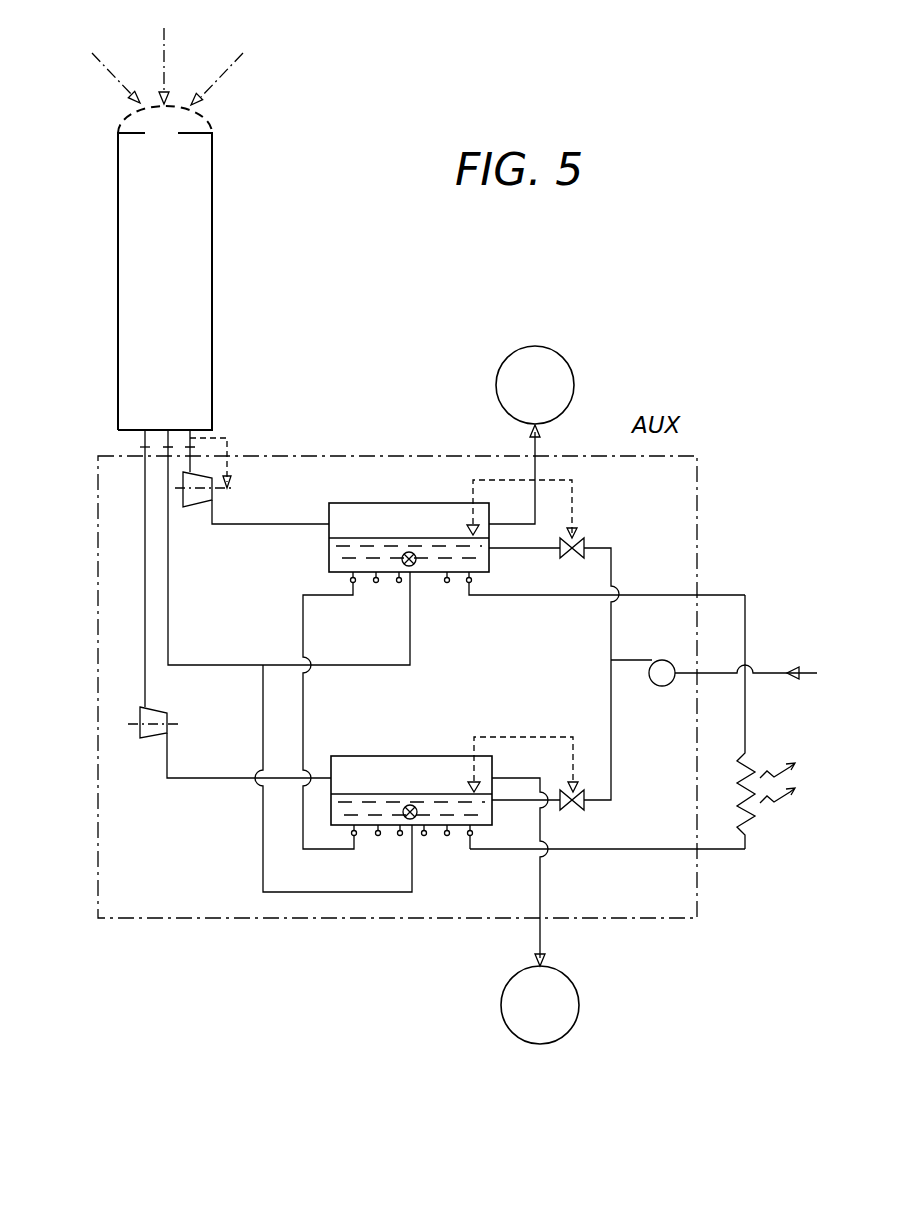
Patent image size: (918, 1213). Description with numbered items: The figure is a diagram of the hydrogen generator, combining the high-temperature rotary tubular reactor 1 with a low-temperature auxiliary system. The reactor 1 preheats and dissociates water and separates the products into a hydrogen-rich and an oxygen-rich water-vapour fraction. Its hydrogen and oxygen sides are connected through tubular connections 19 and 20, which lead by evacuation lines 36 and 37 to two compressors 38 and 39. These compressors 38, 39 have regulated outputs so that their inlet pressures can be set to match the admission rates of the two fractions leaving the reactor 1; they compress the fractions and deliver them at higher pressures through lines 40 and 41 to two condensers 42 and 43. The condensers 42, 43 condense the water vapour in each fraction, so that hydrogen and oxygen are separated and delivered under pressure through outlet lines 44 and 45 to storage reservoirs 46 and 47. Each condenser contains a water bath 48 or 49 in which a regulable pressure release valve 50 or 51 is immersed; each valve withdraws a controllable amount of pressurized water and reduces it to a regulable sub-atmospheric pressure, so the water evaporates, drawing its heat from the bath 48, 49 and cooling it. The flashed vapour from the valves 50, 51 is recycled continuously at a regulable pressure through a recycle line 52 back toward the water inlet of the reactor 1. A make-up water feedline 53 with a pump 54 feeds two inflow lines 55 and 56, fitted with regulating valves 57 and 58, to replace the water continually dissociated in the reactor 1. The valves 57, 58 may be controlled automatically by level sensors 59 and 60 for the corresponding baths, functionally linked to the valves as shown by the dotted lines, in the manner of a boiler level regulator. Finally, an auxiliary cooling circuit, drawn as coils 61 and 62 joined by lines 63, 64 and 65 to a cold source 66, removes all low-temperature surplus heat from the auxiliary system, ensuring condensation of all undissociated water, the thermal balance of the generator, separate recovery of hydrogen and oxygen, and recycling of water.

The rotary tubular reactor 1 is at (212, 223).
The tubular connection 19 is at (190, 433).
The tubular connection 20 is at (144, 441).
The evacuation line 36 is at (186, 462).
The evacuation line 37 is at (145, 542).
The compressor 38 is at (194, 497).
The compressor 39 is at (148, 740).
The line 40 is at (233, 527).
The line 41 is at (178, 780).
The condenser 42 is at (453, 543).
The condenser 43 is at (454, 798).
The outlet line 44 is at (535, 495).
The outlet line 45 is at (542, 887).
The storage reservoir 46 is at (532, 347).
The storage reservoir 47 is at (539, 1045).
The water bath 48 is at (345, 547).
The water bath 49 is at (347, 800).
The pressure release valve 50 is at (417, 563).
The pressure release valve 51 is at (418, 813).
The recycle line 52 is at (168, 598).
The make-up water feedline 53 is at (763, 672).
The pump 54 is at (662, 687).
The inflow line 55 is at (612, 570).
The inflow line 56 is at (614, 755).
The regulating valve 57 is at (573, 560).
The regulating valve 58 is at (572, 810).
The level sensor 59 is at (468, 527).
The level sensor 60 is at (470, 785).
The coil 61 is at (377, 585).
The coil 62 is at (380, 838).
The line 63 is at (306, 699).
The line 64 is at (649, 849).
The line 65 is at (528, 597).
The cold source 66 is at (737, 808).